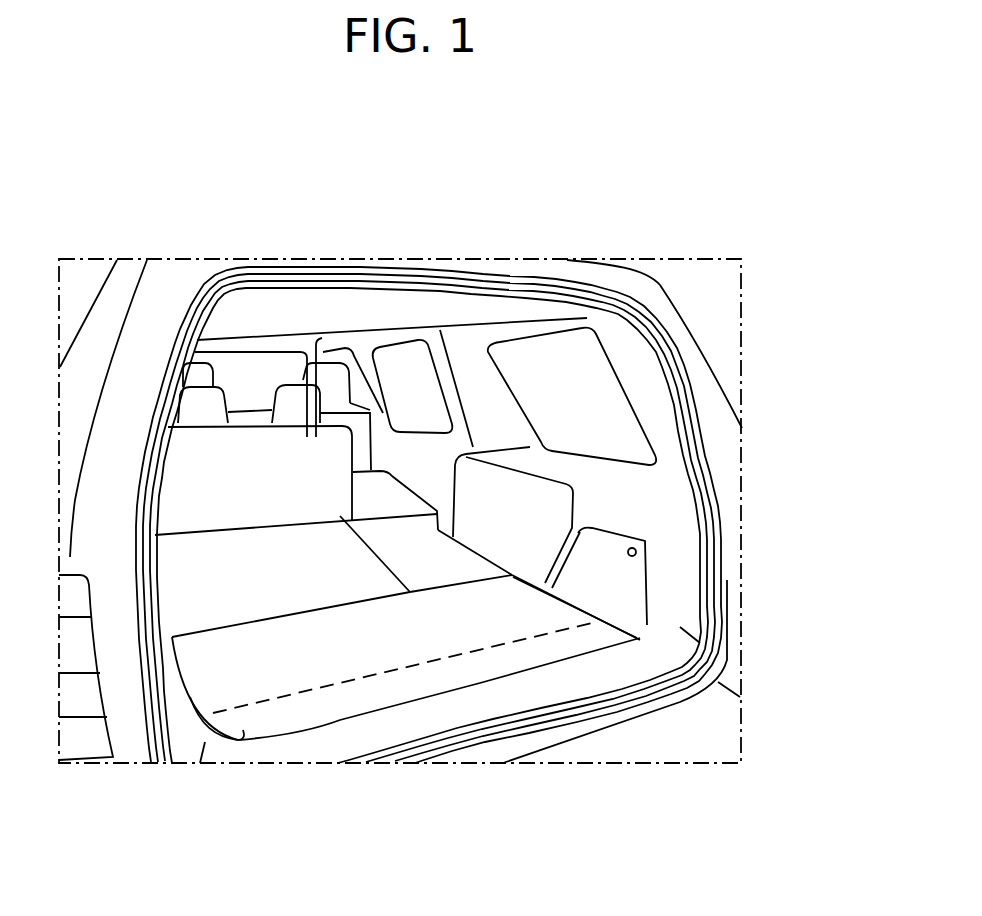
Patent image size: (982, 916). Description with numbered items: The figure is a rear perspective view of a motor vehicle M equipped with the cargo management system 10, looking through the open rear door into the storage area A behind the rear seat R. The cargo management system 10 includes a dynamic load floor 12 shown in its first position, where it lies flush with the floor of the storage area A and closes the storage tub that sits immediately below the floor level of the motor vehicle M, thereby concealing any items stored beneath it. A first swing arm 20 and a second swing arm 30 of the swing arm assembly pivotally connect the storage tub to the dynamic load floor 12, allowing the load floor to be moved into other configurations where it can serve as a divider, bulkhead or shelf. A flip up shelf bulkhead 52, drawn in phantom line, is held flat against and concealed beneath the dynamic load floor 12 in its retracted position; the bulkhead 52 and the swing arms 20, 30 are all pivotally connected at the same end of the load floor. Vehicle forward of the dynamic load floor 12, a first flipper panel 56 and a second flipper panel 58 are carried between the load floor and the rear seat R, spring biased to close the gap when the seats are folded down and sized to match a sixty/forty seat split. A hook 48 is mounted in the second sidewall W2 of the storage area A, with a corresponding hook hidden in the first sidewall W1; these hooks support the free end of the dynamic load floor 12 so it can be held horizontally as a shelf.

The rear seat R is at (245, 440).
The cargo management system 10 is at (410, 482).
The motor vehicle M is at (680, 327).
The second sidewall W2 is at (618, 517).
The hook 48 is at (637, 552).
The storage area A is at (613, 572).
The first flipper panel 56 is at (296, 553).
The second flipper panel 58 is at (459, 561).
The dynamic load floor 12 is at (406, 657).
The first swing arm 20 is at (240, 740).
The first sidewall W1 is at (165, 607).
The flip up shelf bulkhead 52 is at (403, 683).
The second swing arm 30 is at (570, 613).